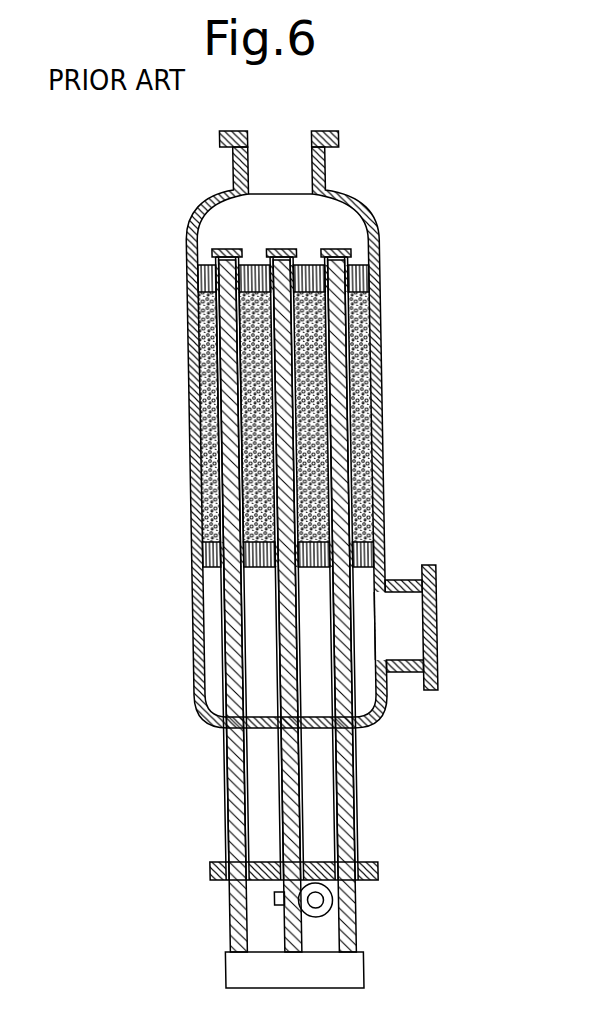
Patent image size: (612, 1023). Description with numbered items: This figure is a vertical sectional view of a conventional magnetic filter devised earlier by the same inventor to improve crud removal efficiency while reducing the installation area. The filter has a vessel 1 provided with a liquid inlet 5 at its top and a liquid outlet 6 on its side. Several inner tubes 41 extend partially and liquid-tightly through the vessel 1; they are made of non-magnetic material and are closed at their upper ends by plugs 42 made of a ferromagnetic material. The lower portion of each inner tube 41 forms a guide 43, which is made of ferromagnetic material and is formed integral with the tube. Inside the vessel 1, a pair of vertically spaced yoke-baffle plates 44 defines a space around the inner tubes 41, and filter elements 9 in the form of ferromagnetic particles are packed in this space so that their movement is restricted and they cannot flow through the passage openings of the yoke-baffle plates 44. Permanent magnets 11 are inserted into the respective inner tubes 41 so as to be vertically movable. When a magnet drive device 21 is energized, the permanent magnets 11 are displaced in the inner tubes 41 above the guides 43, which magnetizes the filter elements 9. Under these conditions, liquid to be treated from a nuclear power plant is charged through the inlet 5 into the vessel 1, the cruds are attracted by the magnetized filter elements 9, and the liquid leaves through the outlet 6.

The vessel 1 is at (377, 212).
The liquid inlet 5 is at (244, 131).
The liquid outlet 6 is at (433, 656).
The filter elements 9 is at (368, 310).
The permanent magnets 11 is at (232, 369).
The magnet drive device 21 is at (311, 916).
The inner tubes 41 is at (347, 371).
The plugs 42 is at (286, 249).
The guide 43 is at (217, 757).
The yoke-baffle plates 44 is at (216, 265).